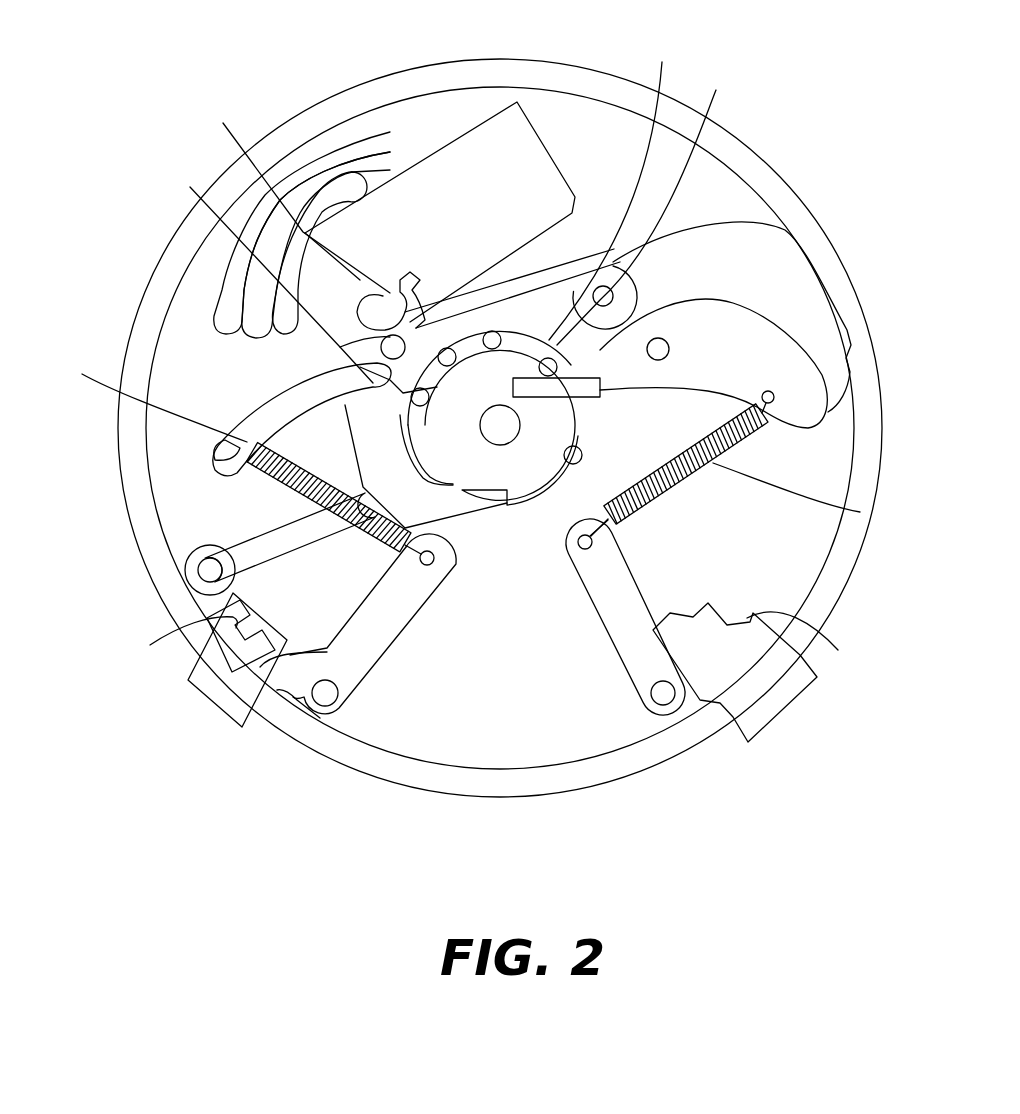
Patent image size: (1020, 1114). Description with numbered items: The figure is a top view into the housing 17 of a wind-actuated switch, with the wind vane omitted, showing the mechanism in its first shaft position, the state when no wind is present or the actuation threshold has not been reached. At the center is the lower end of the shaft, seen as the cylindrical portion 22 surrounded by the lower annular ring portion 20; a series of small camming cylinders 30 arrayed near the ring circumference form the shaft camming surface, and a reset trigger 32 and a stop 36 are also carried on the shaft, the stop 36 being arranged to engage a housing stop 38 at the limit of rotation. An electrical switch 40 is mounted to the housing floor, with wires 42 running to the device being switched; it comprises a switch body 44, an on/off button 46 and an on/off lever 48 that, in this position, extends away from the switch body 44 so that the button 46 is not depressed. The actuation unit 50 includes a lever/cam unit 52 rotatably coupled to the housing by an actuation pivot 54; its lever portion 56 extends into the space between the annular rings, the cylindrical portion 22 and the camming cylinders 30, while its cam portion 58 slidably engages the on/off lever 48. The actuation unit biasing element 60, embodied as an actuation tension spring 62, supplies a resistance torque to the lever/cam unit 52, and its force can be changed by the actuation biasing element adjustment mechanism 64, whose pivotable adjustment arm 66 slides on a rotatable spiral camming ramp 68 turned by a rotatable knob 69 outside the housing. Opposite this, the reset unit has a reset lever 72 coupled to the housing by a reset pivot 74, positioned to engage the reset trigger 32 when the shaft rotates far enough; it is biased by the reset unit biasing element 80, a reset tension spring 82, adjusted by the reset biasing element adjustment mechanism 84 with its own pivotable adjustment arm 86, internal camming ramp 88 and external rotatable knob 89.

The housing 17 is at (757, 146).
The lower annular ring portion 20 is at (538, 495).
The cylindrical portion 22 is at (511, 445).
The camming cylinders 30 is at (453, 208).
The reset trigger 32 is at (628, 520).
The stop 36 is at (717, 463).
The housing stop 38 is at (345, 355).
The electrical switch 40 is at (547, 165).
The wires 42 is at (380, 113).
The switch body 44 is at (428, 193).
The on/off button 46 is at (443, 312).
The on/off lever 48 is at (618, 247).
The actuation unit 50 is at (862, 338).
The lever/cam unit 52 is at (780, 335).
The actuation pivot 54 is at (668, 338).
The lever portion 56 is at (695, 478).
The cam portion 58 is at (650, 300).
The actuation unit biasing element 60 is at (860, 510).
The actuation tension spring 62 is at (640, 497).
The actuation biasing element adjustment mechanism 64 is at (720, 700).
The pivotable adjustment arm 66 is at (617, 643).
The camming ramp 68 is at (812, 640).
The rotatable knob 69 is at (793, 700).
The reset lever 72 is at (240, 535).
The reset pivot 74 is at (195, 572).
The reset unit biasing element 80 is at (147, 405).
The reset tension spring 82 is at (377, 547).
The reset biasing element adjustment mechanism 84 is at (270, 697).
The pivotable adjustment arm 86 is at (397, 625).
The camming ramp 88 is at (190, 636).
The rotatable knob 89 is at (223, 712).